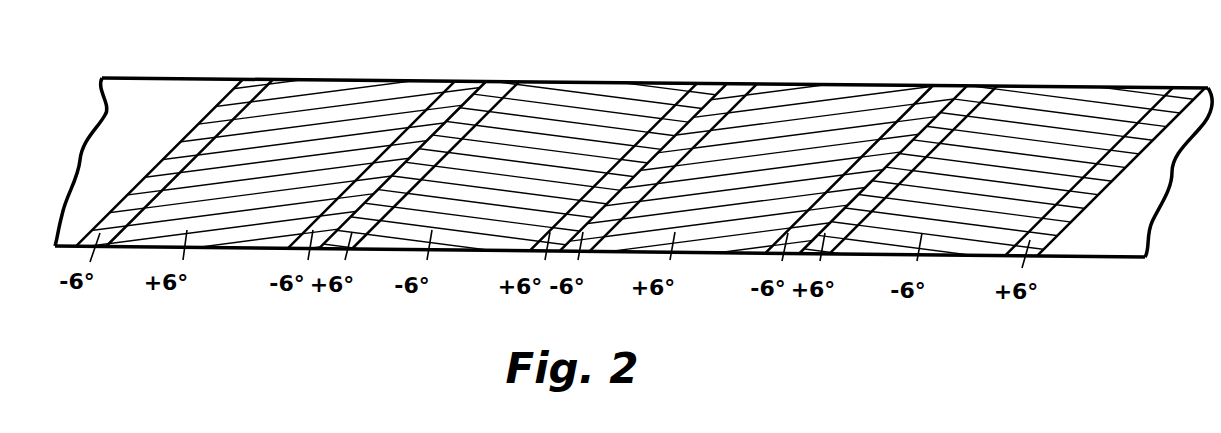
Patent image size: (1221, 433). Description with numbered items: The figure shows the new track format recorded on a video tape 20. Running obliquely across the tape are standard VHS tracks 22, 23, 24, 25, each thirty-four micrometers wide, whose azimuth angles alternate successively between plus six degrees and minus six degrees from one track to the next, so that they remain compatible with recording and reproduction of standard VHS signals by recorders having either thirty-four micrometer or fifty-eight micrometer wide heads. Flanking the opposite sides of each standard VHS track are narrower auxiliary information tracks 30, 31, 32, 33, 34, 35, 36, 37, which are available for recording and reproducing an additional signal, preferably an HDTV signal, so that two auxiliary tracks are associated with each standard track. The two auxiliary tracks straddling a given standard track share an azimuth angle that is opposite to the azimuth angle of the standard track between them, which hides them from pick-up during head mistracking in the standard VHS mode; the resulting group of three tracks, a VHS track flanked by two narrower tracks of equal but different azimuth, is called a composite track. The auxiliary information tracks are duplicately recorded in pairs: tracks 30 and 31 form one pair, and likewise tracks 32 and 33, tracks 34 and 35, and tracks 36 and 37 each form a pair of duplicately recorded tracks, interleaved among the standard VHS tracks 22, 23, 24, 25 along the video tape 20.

The video tape 20 is at (166, 97).
The standard VHS track 22 is at (368, 95).
The standard VHS track 23 is at (592, 90).
The standard VHS track 24 is at (812, 92).
The standard VHS track 25 is at (1055, 103).
The auxiliary information track 30 is at (263, 88).
The auxiliary information track 31 is at (465, 90).
The auxiliary information track 32 is at (497, 90).
The auxiliary information track 33 is at (713, 90).
The auxiliary information track 34 is at (737, 90).
The auxiliary information track 35 is at (945, 95).
The auxiliary information track 36 is at (973, 97).
The auxiliary information track 37 is at (1190, 97).